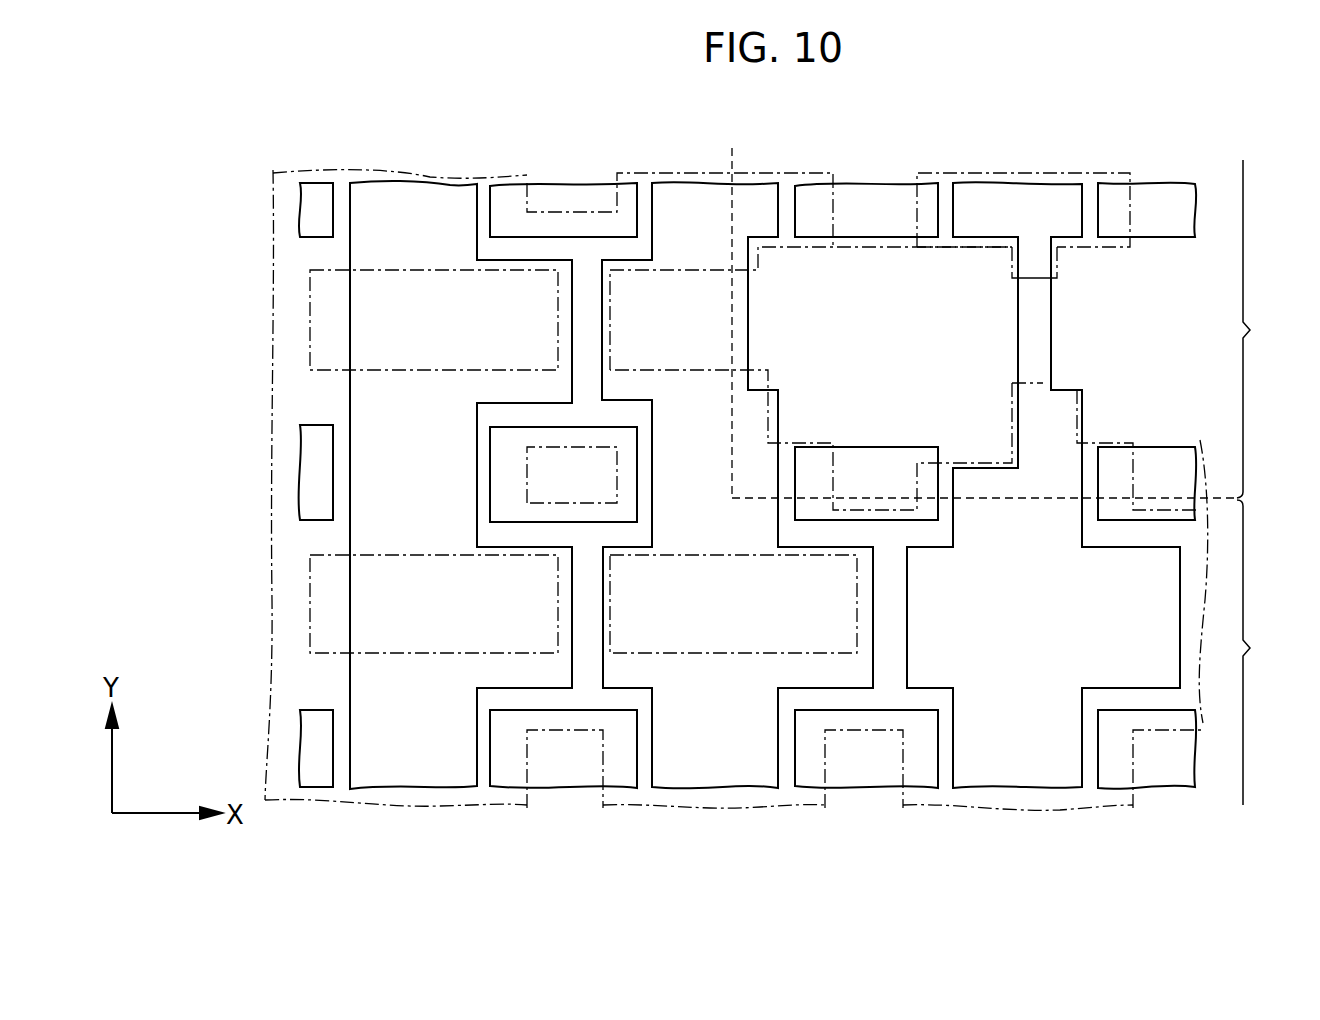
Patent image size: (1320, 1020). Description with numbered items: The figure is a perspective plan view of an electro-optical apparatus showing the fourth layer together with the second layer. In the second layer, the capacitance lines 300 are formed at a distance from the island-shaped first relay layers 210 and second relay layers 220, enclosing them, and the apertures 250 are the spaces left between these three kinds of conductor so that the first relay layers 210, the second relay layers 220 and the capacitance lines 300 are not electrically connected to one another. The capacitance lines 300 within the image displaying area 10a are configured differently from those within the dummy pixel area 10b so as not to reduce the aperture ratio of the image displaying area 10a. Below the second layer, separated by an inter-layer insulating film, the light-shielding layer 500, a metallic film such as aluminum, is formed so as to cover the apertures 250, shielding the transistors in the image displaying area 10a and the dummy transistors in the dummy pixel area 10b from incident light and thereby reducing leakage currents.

The light-shielding layer 500 is at (660, 168).
The capacitance line 300 is at (572, 302).
The aperture 250 is at (500, 417).
The second relay layer 220 is at (597, 437).
The first relay layer 210 is at (880, 458).
The image displaying area 10a is at (1263, 329).
The dummy pixel area 10b is at (1263, 652).